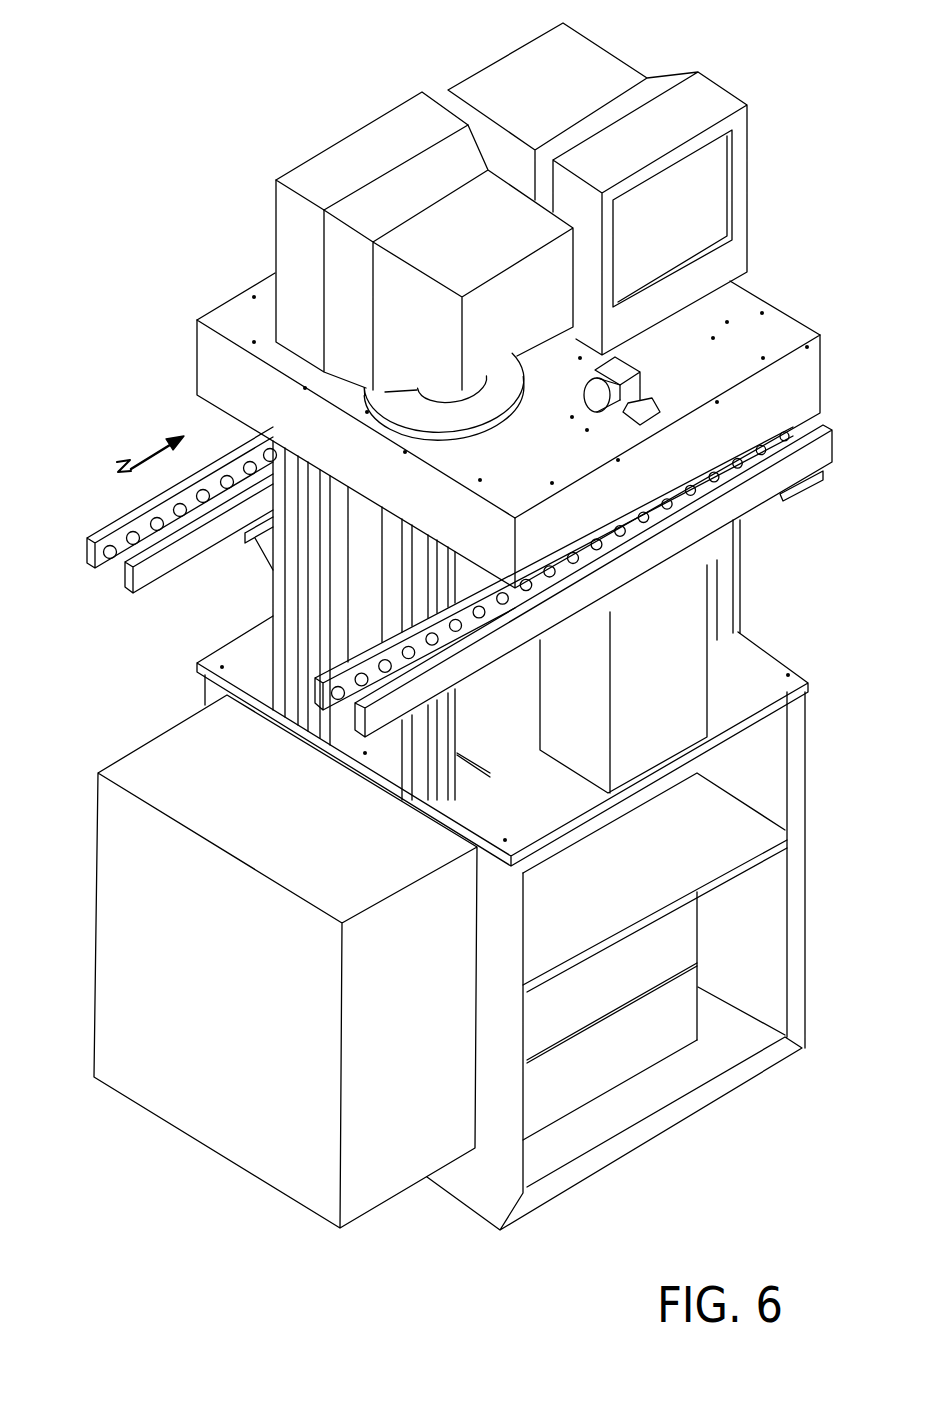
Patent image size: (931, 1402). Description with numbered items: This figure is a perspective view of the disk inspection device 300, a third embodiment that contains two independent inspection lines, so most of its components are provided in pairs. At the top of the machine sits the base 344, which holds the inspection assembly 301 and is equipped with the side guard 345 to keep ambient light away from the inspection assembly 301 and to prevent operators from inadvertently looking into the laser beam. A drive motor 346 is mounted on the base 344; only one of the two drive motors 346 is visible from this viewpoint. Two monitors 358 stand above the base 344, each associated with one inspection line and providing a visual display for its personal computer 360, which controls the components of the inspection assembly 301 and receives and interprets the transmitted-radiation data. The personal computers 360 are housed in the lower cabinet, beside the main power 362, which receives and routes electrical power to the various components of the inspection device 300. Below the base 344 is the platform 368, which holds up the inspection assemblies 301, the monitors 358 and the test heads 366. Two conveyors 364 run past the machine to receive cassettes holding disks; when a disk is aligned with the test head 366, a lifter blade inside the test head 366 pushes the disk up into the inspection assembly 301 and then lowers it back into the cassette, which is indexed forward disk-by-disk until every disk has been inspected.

The disk inspection device 300 is at (827, 43).
The inspection assembly 301 is at (127, 466).
The base 344 is at (793, 340).
The side guard 345 is at (196, 380).
The drive motor 346 is at (640, 378).
The monitor 358 is at (273, 200).
The personal computer 360 is at (698, 927).
The main power 362 is at (92, 1040).
The conveyor 364 is at (102, 567).
The test head 366 is at (698, 685).
The platform 368 is at (773, 662).